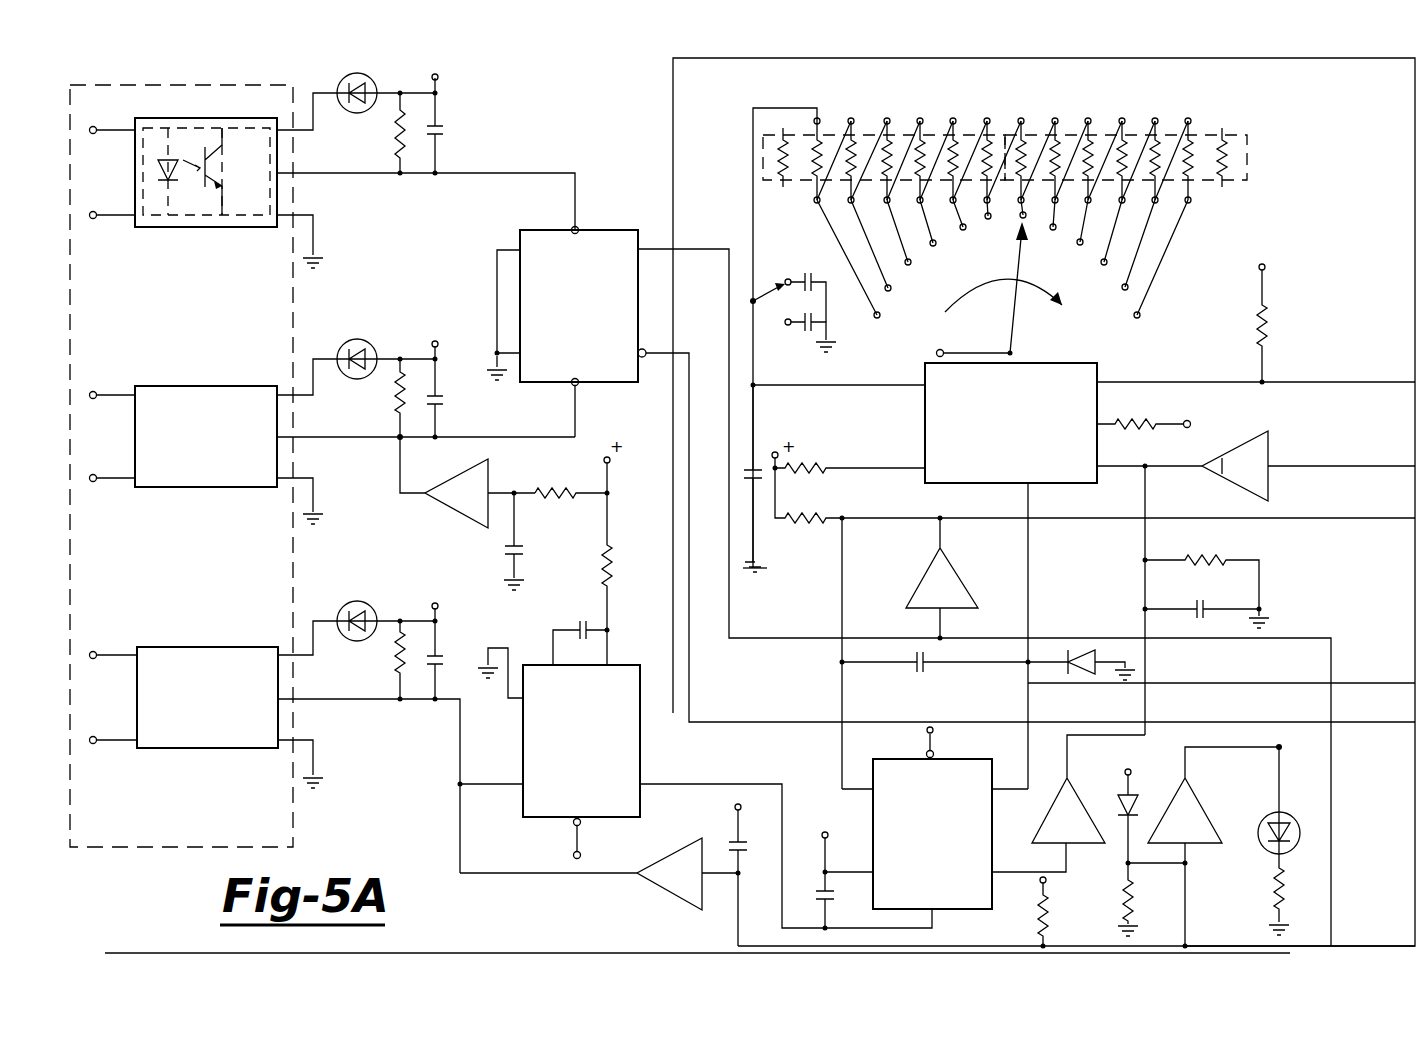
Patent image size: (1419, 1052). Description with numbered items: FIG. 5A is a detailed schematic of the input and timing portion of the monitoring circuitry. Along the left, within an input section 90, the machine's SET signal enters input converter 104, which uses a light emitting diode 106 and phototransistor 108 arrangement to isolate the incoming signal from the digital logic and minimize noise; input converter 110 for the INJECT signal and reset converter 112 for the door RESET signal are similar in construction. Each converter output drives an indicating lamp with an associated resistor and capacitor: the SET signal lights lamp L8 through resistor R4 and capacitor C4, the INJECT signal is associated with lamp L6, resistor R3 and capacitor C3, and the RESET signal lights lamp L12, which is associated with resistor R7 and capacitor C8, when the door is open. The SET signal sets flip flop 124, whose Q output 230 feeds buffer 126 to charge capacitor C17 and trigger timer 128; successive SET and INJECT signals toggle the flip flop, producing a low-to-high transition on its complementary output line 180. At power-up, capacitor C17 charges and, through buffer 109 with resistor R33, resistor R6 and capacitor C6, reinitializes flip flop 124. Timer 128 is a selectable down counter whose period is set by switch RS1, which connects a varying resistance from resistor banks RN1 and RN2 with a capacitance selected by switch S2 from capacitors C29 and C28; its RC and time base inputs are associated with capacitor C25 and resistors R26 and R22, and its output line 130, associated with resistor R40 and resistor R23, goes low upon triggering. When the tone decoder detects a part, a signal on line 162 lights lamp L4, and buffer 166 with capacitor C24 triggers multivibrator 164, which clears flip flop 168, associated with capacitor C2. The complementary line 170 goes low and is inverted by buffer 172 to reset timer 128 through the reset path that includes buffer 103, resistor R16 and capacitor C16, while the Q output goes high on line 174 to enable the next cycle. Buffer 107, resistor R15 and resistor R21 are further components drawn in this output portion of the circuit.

The input circuit enclosure 90 is at (274, 84).
The input converter 104 is at (184, 160).
The light emitting diode 106 is at (178, 183).
The phototransistor 108 is at (215, 172).
The lamp L8 is at (334, 100).
The resistor R4 is at (392, 150).
The capacitor C4 is at (448, 122).
The flip flop 124 is at (606, 230).
The Q output 230 is at (718, 229).
The Q-bar output line 180 is at (708, 360).
The input converter 110 is at (180, 386).
The injecting lamp L6 is at (337, 380).
The resistor R3 is at (392, 397).
The capacitor C3 is at (443, 404).
The buffer 109 is at (445, 520).
The resistor R33 is at (578, 474).
The capacitor C17 is at (534, 548).
The resistor R6 is at (612, 561).
The capacitor C6 is at (592, 610).
The reset converter 112 is at (232, 630).
The lamp L12 is at (374, 604).
The resistor R7 is at (395, 662).
The capacitor C8 is at (452, 661).
The multivibrator 164 is at (586, 823).
The buffer 166 is at (655, 888).
The capacitor C24 is at (732, 832).
The flip flop 168 is at (964, 908).
The capacitor C2 is at (828, 890).
The Q-bar line 170 is at (1006, 866).
The buffer 172 is at (1092, 793).
The amplifier 107 is at (1180, 798).
The resistor R15 is at (1136, 913).
The resistor R21 is at (1048, 934).
The lamp L4 is at (1312, 795).
The line 162 is at (1240, 918).
The line 174 is at (1262, 665).
The timer 128 is at (1060, 364).
The capacitor C25 is at (758, 448).
The resistor R26 is at (828, 462).
The resistor R22 is at (824, 510).
The buffer 126 is at (950, 582).
The amplifier 103 is at (1254, 435).
The resistor R23 is at (1134, 421).
The line 130 is at (1220, 356).
The resistor R40 is at (1270, 322).
The resistor R16 is at (1204, 552).
The capacitor C16 is at (1210, 585).
The switch S2 is at (774, 322).
The capacitor C29 is at (822, 262).
The capacitor C28 is at (808, 344).
The resistor bank RN2 is at (860, 135).
The resistor bank RN1 is at (1095, 135).
The switch RS1 is at (1012, 326).